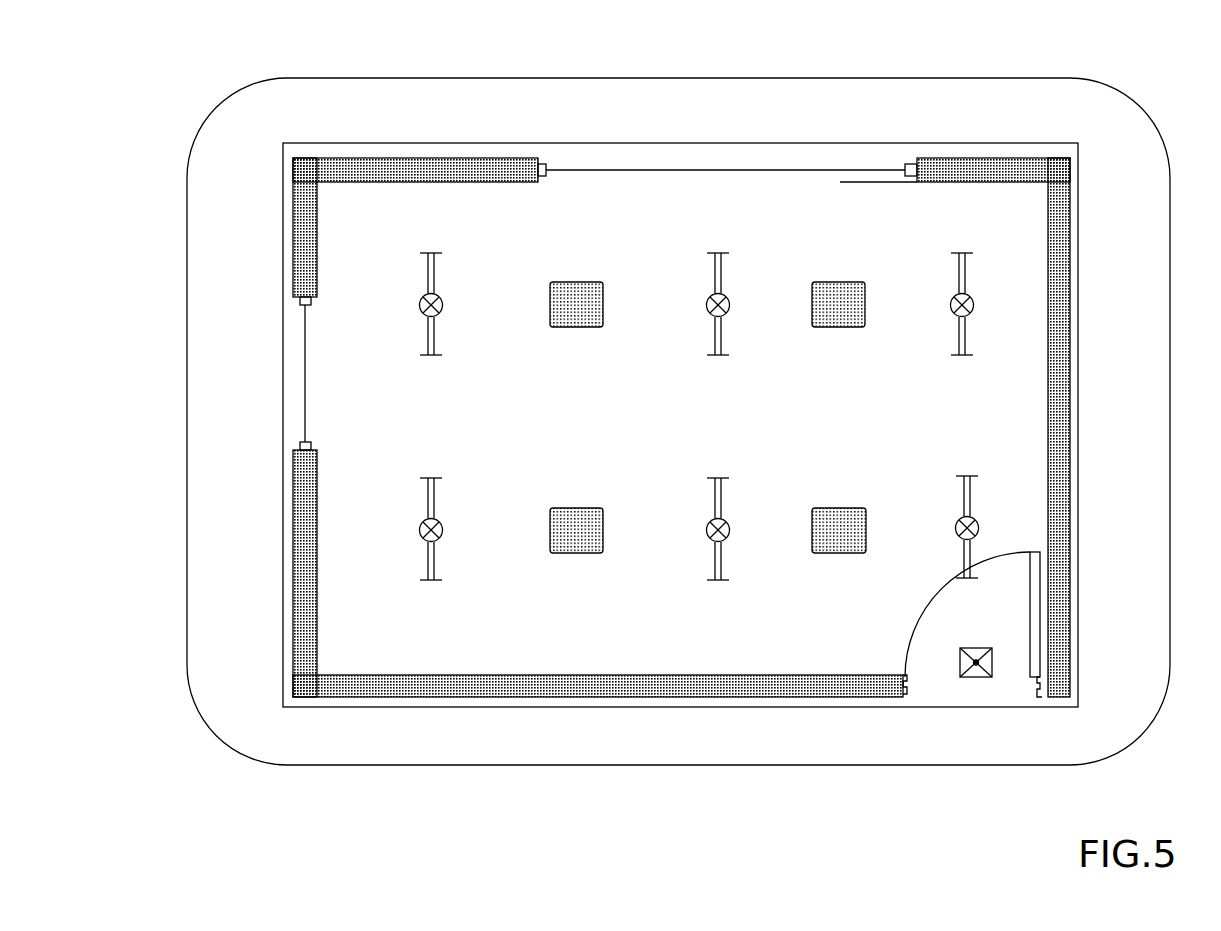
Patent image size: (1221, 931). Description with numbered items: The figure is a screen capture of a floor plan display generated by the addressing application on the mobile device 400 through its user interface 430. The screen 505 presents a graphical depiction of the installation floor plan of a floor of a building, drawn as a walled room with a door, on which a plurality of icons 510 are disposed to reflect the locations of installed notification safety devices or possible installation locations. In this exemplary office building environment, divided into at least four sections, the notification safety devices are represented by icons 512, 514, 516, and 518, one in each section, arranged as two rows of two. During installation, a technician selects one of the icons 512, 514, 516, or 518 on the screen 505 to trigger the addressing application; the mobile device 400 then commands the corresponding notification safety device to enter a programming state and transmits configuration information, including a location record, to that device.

The mobile device 400 is at (198, 86).
The user interface 430 is at (731, 139).
The screen 505 is at (832, 412).
The icons 510 is at (700, 258).
The icon 512 is at (548, 301).
The icon 514 is at (868, 301).
The icon 516 is at (548, 531).
The icon 518 is at (868, 533).